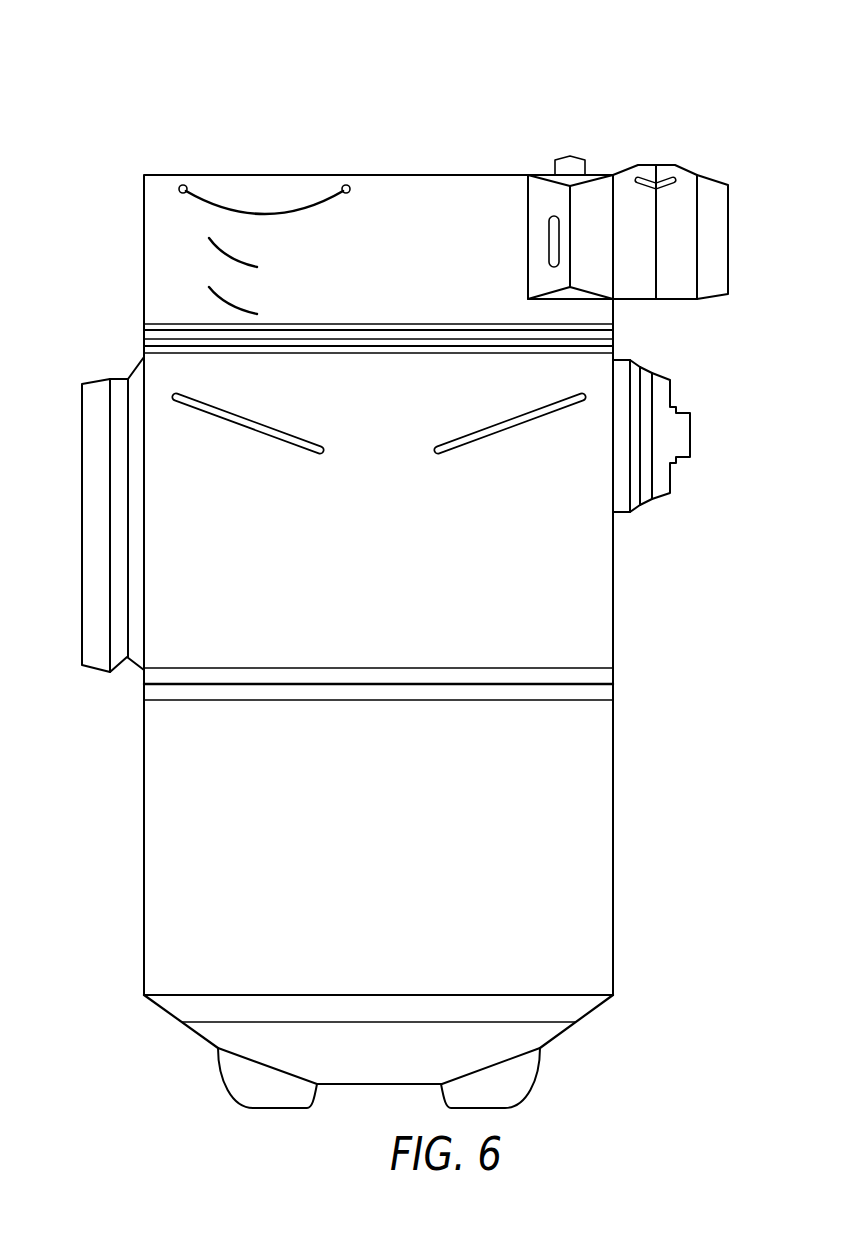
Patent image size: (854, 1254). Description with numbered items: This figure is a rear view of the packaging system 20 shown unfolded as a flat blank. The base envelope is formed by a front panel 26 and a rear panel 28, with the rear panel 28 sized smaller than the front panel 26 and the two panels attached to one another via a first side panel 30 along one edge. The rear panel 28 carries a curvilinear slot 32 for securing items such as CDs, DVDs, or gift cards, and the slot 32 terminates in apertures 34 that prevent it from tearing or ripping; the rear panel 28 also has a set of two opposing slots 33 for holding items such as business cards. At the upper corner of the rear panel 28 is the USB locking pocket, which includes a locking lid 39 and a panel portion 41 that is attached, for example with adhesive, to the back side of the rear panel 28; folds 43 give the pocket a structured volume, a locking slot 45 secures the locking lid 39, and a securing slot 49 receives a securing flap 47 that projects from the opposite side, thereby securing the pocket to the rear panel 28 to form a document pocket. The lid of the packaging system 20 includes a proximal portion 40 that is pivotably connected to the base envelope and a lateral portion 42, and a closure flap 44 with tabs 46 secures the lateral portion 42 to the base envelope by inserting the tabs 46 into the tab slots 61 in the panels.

The packaging system 20 is at (165, 83).
The front panel 26 is at (595, 636).
The rear panel 28 is at (443, 202).
The first side panel 30 is at (90, 585).
The slot 32 is at (310, 207).
The opposing slots 33 is at (215, 248).
The apertures 34 is at (182, 185).
The locking lid 39 is at (586, 173).
The proximal portion 40 is at (602, 773).
The panel portion 41 is at (687, 208).
The lateral portion 42 is at (175, 1003).
The folds 43 is at (570, 275).
The closure flap 44 is at (548, 1032).
The locking slot 45 is at (663, 177).
The tab 46 is at (233, 1073).
The securing flap 47 is at (682, 443).
The securing slot 49 is at (552, 233).
The tab slots 61 is at (187, 405).